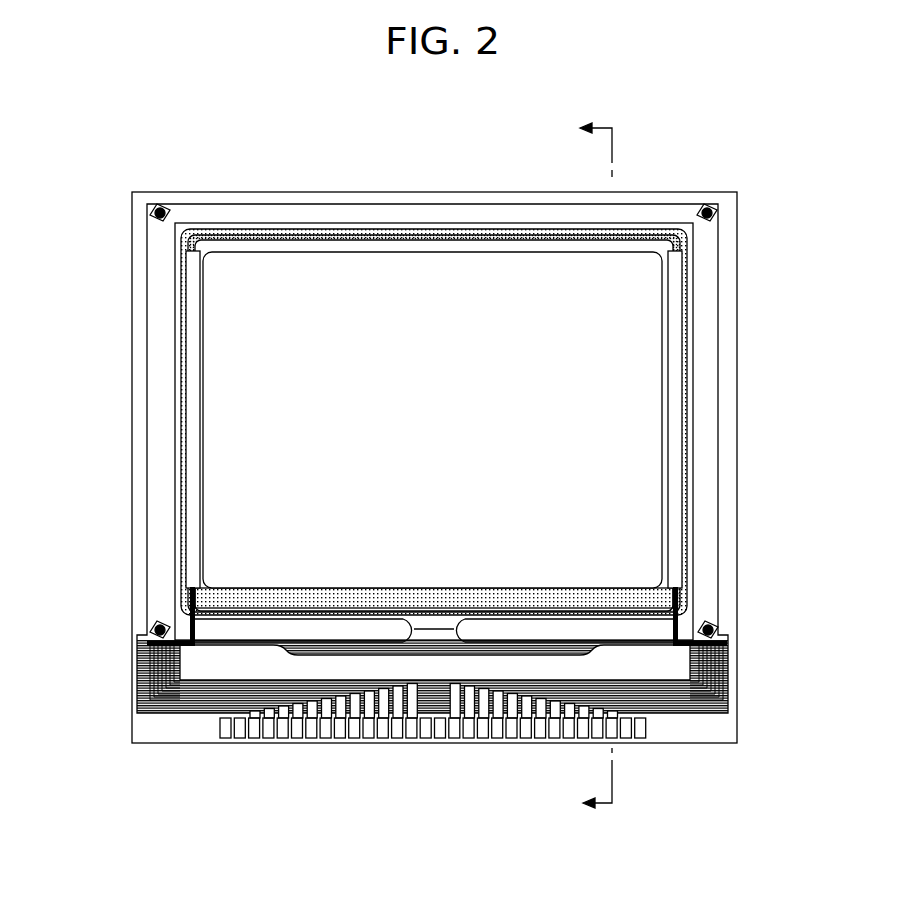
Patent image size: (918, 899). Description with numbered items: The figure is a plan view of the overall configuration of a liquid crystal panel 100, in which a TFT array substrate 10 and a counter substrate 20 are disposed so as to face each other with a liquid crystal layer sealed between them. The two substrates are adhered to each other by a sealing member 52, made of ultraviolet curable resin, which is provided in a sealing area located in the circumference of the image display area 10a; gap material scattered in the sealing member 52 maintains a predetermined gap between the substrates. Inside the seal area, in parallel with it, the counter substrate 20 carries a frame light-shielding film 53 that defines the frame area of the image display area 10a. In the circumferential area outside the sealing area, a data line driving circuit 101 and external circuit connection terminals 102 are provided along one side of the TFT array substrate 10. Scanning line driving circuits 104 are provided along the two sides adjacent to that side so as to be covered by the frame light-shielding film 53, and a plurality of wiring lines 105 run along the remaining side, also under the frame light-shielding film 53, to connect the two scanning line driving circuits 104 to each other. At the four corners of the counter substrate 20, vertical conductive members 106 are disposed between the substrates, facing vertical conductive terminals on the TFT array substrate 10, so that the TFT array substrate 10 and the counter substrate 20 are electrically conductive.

The TFT array substrate 10 is at (261, 198).
The image display area 10a is at (250, 375).
The counter substrate 20 is at (457, 222).
The sealing member 52 is at (708, 351).
The frame light-shielding film 53 is at (693, 590).
The liquid crystal panel 100 is at (706, 155).
The data line driving circuit 101 is at (204, 668).
The external circuit connection terminals 102 is at (399, 736).
The scanning line driving circuits 104 is at (682, 420).
The wiring lines 105 is at (334, 228).
The vertical conductive members 106 is at (166, 212).